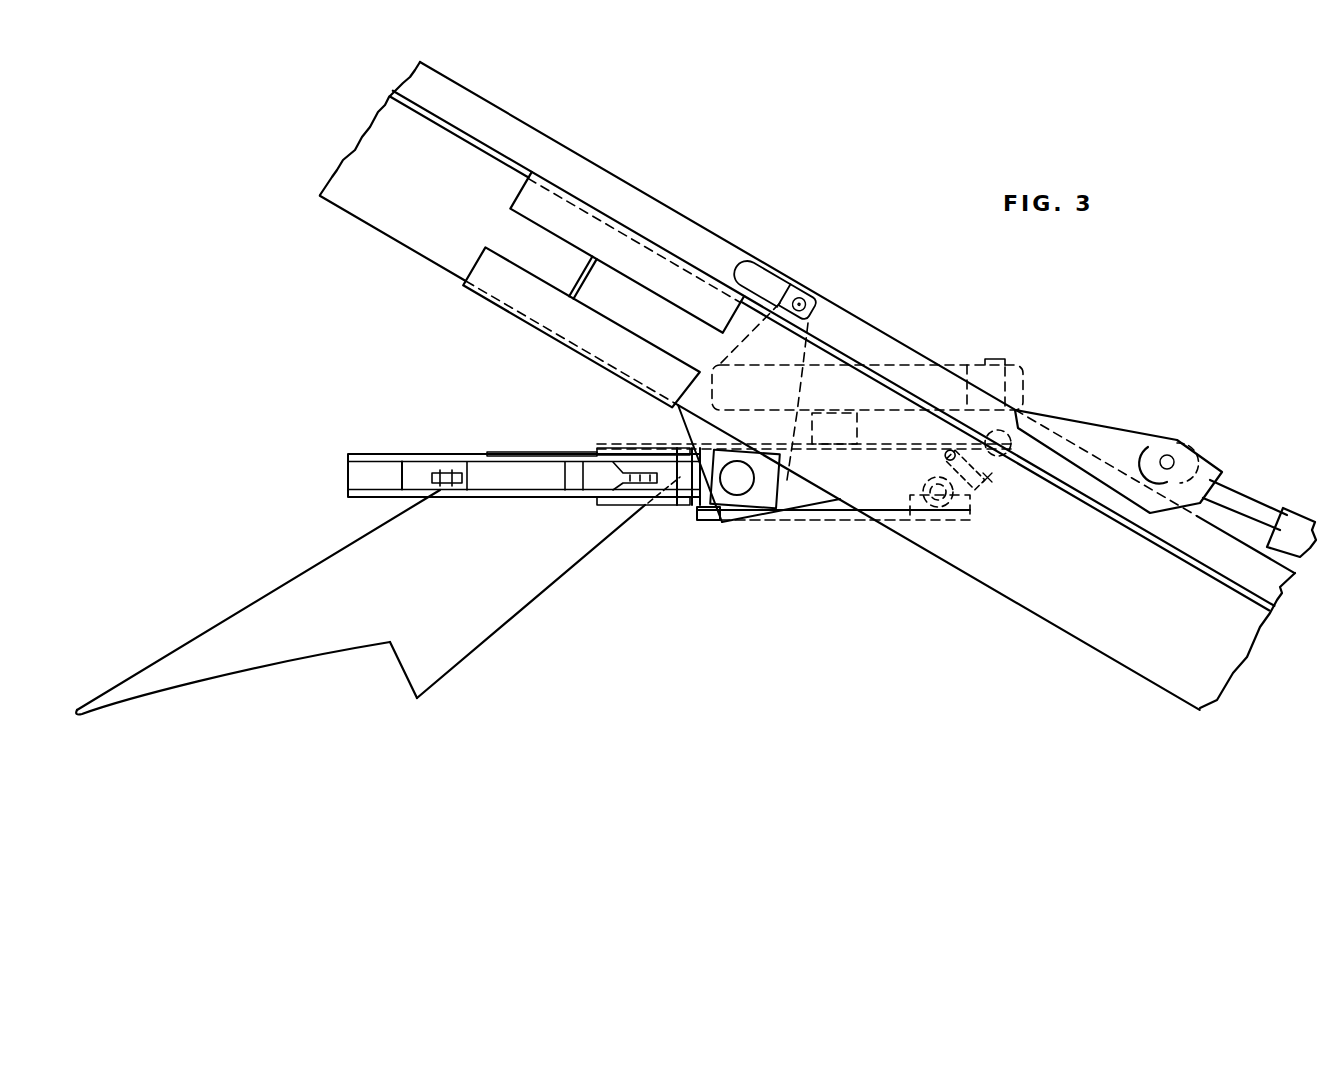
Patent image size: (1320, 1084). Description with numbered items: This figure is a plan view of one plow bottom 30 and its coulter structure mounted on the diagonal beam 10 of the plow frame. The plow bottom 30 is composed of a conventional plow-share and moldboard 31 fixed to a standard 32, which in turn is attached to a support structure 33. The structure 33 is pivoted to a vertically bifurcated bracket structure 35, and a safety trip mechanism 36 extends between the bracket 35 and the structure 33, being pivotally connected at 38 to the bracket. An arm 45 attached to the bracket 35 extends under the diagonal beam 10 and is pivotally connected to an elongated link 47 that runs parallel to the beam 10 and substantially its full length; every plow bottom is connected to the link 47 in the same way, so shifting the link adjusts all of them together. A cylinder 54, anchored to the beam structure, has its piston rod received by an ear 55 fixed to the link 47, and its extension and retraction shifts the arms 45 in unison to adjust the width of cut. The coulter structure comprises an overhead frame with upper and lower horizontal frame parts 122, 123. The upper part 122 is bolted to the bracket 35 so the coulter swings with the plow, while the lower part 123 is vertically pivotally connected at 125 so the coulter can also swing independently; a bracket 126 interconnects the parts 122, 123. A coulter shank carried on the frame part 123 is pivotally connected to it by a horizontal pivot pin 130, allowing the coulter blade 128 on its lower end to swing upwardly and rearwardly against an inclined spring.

The beam 10 is at (393, 222).
The elongated link 47 is at (698, 236).
The lower horizontal frame part 123 is at (957, 367).
The horizontal pivot pin 130 is at (1027, 383).
The ear 55 is at (1103, 433).
The cylinder 54 is at (1297, 513).
The coulter blade 128 is at (890, 450).
The vertical pivotal connection 125 is at (1022, 470).
The bracket 126 is at (988, 476).
The upper horizontal frame part 122 is at (843, 507).
The arm 45 is at (683, 430).
The support structure 33 is at (395, 455).
The standard 32 is at (352, 479).
The safety trip mechanism 36 is at (513, 477).
The pivotal connection 38 is at (635, 498).
The vertically bifurcated bracket structure 35 is at (680, 507).
The plow bottom 30 is at (443, 587).
The plow-share and moldboard 31 is at (308, 642).